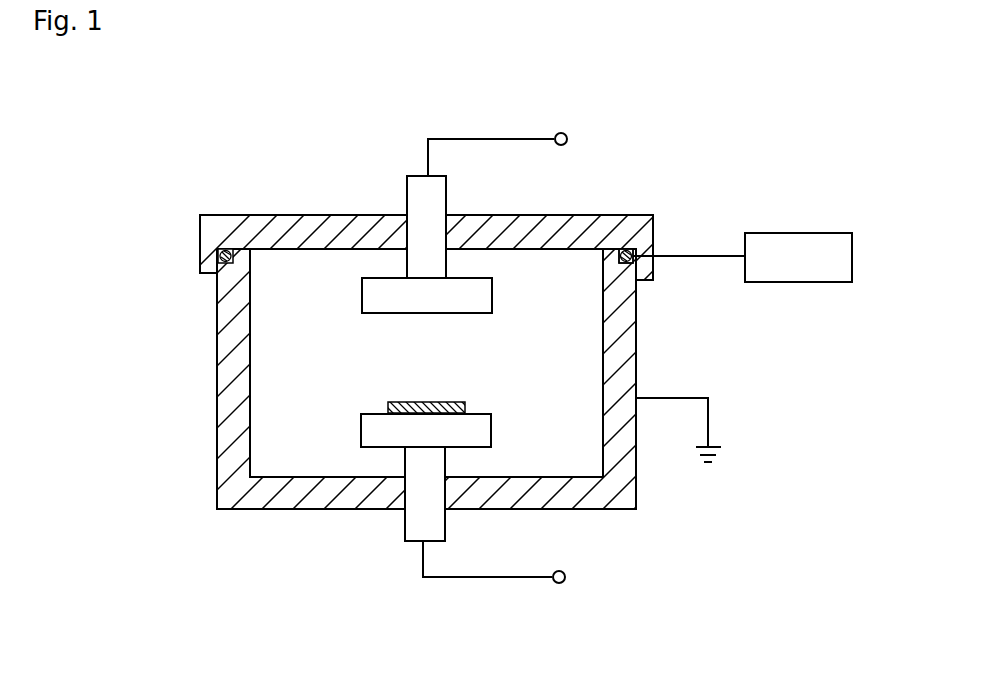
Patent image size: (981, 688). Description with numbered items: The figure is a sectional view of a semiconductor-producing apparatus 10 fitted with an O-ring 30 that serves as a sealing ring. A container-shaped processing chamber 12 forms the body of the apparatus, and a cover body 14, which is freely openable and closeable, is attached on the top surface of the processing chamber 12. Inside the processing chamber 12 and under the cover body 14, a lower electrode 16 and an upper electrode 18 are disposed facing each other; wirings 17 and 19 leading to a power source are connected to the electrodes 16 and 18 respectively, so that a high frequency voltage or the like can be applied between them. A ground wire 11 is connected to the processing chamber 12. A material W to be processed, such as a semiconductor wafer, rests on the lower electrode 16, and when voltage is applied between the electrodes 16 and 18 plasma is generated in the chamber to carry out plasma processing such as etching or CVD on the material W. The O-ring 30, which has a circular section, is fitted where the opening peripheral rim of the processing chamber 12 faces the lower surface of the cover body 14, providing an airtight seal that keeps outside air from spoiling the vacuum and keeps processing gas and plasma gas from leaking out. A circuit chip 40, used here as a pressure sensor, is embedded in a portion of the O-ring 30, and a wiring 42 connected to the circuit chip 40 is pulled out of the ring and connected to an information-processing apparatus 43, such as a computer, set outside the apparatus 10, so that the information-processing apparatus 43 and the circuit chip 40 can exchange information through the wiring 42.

The semiconductor-producing apparatus 10 is at (550, 277).
The ground wire 11 is at (660, 398).
The processing chamber 12 is at (220, 407).
The cover body 14 is at (323, 213).
The lower electrode 16 is at (382, 440).
The wiring 17 is at (470, 577).
The electrode 18 is at (378, 290).
The wiring 19 is at (467, 139).
The O-ring 30 is at (626, 252).
The circuit chip 40 is at (632, 264).
The wiring 42 is at (693, 256).
The information-processing apparatus 43 is at (824, 272).
The material to be processed W is at (408, 402).